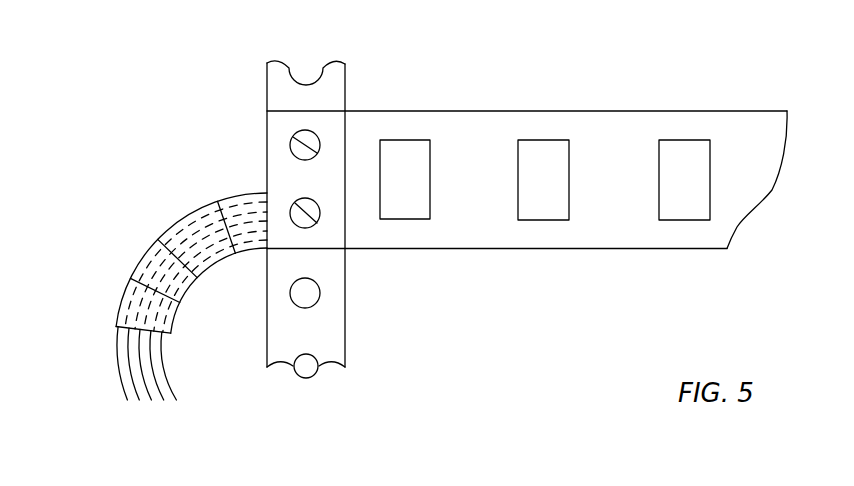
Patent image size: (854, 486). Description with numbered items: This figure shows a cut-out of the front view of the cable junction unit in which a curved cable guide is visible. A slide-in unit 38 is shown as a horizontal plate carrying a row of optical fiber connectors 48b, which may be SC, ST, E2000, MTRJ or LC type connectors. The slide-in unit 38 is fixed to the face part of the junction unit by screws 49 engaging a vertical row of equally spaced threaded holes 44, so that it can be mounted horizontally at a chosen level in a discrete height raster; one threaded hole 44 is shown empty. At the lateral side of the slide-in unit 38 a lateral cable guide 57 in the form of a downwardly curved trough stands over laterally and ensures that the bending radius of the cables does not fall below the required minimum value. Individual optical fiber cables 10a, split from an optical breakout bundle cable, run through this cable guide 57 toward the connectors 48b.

The slide-in unit 38 is at (762, 127).
The optical fiber connectors 48b is at (682, 150).
The screw 49 is at (320, 140).
The threaded hole 44 is at (308, 293).
The lateral cable guide 57 is at (182, 282).
The individual optical fiber cable 10a is at (160, 367).